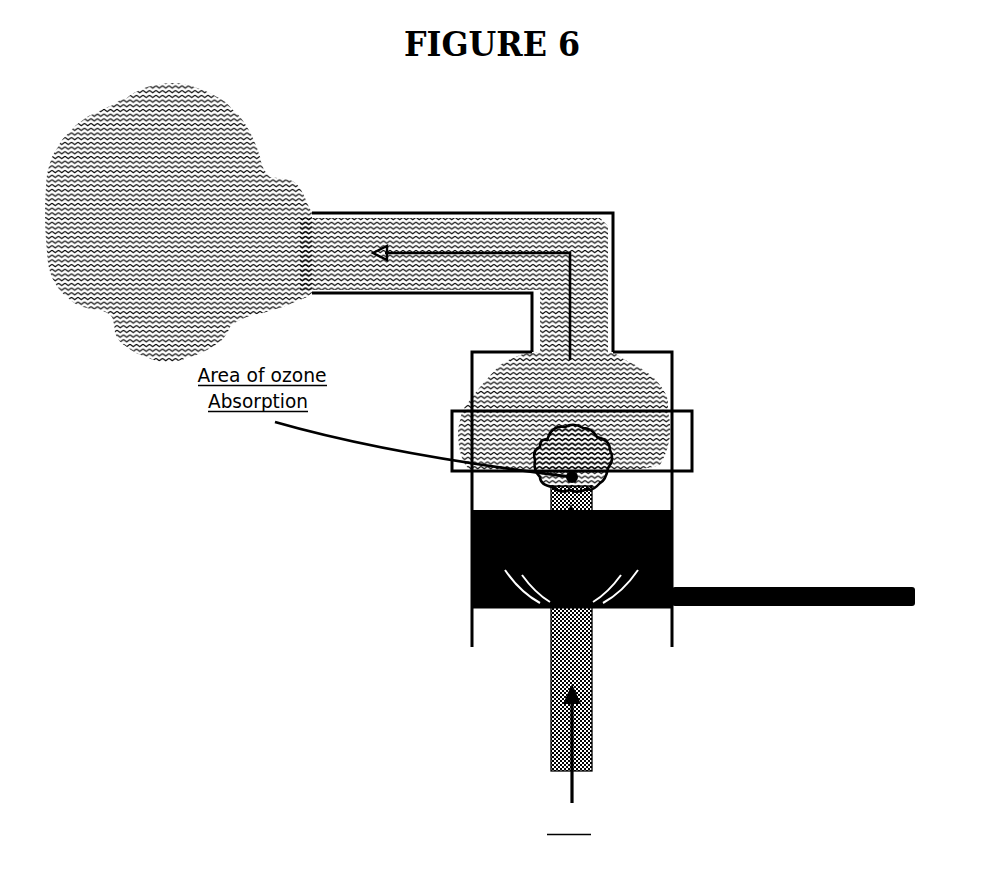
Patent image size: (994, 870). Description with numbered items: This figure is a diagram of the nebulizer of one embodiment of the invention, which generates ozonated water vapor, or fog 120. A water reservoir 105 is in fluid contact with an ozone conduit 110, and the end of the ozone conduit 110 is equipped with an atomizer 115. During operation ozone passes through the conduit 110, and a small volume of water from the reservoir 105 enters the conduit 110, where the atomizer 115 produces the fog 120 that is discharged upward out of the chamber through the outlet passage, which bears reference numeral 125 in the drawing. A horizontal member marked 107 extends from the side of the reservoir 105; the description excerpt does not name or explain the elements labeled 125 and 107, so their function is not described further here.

The exhaust conduit 125 is at (320, 202).
The fog 120 is at (580, 391).
The atomizer 115 is at (578, 477).
The ozone conduit 110 is at (552, 748).
The water reservoir 105 is at (472, 600).
The support arm 107 is at (847, 588).